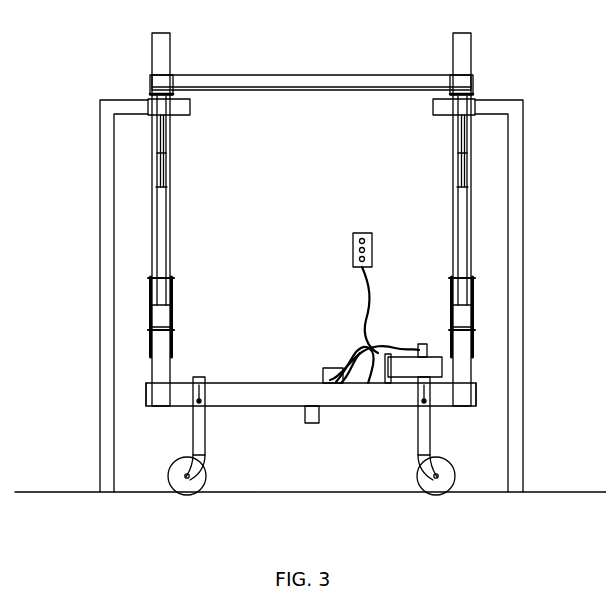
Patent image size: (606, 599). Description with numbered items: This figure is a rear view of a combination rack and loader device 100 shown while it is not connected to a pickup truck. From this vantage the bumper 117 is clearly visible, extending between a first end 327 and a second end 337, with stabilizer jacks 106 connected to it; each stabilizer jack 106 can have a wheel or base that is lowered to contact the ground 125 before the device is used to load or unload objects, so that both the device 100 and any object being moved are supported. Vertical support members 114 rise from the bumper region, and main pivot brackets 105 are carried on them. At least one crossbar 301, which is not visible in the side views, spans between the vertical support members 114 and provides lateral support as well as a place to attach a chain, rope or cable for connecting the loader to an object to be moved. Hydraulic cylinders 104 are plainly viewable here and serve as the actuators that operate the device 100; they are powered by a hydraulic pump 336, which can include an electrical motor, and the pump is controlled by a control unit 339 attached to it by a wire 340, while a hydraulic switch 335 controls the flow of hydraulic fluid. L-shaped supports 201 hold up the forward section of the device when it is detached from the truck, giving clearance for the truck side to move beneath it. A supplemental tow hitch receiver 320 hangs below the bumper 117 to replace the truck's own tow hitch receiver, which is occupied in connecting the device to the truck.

The combination rack and loader device 100 is at (150, 82).
The crossbar 301 is at (280, 75).
The vertical support member 114 is at (152, 163).
The hydraulic cylinder 104 is at (157, 207).
The main pivot bracket 105 is at (150, 282).
The support 201 is at (100, 249).
The bumper 117 is at (268, 383).
The first end 327 is at (146, 390).
The second end 337 is at (476, 393).
The stabilizer jack 106 is at (193, 430).
The ground 125 is at (82, 492).
The supplemental tow hitch receiver 320 is at (312, 423).
The control unit 339 is at (353, 245).
The wire 340 is at (368, 298).
The hydraulic switch 335 is at (333, 368).
The hydraulic pump 336 is at (435, 356).